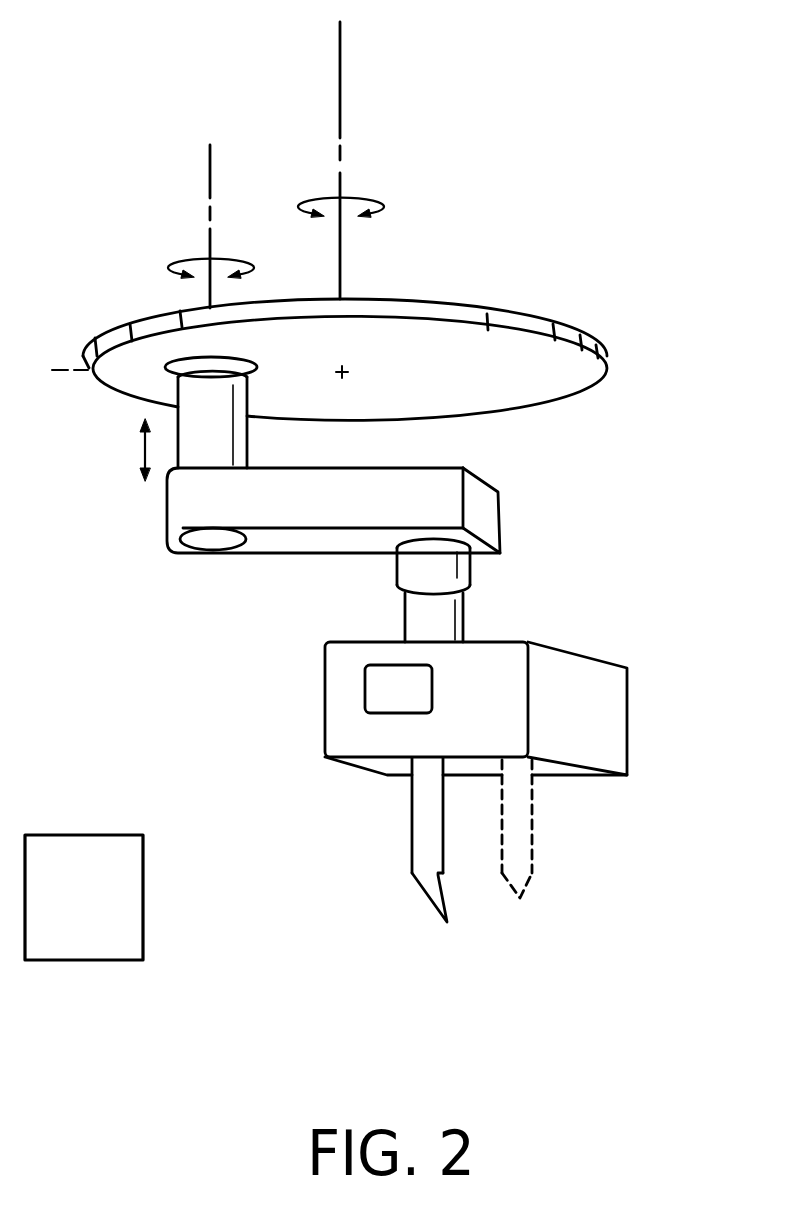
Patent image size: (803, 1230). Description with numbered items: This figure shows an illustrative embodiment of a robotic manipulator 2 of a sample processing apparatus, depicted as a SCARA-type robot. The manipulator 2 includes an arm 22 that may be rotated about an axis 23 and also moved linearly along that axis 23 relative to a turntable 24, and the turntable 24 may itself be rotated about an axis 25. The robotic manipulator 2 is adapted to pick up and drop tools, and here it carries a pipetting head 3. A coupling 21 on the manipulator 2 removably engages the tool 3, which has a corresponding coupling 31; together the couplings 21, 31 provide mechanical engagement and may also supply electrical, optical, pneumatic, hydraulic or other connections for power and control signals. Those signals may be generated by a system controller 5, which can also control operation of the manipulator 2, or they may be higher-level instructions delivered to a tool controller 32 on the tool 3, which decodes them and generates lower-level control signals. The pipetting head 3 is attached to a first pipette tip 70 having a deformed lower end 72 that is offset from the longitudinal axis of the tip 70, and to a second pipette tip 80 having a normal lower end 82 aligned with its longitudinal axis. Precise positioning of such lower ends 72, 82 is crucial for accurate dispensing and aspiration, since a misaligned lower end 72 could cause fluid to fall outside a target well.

The robotic manipulator 2 is at (326, 475).
The pipetting head 3 is at (478, 708).
The system controller 5 is at (82, 855).
The coupling 21 is at (470, 575).
The arm 22 is at (482, 492).
The axis 23 is at (209, 165).
The turntable 24 is at (565, 322).
The axis 25 is at (341, 45).
The coupling 31 is at (463, 614).
The tool controller 32 is at (365, 690).
The first pipette tip 70 is at (437, 870).
The deformed lower end 72 is at (449, 920).
The second pipette tip 80 is at (572, 858).
The normal lower end 82 is at (536, 900).